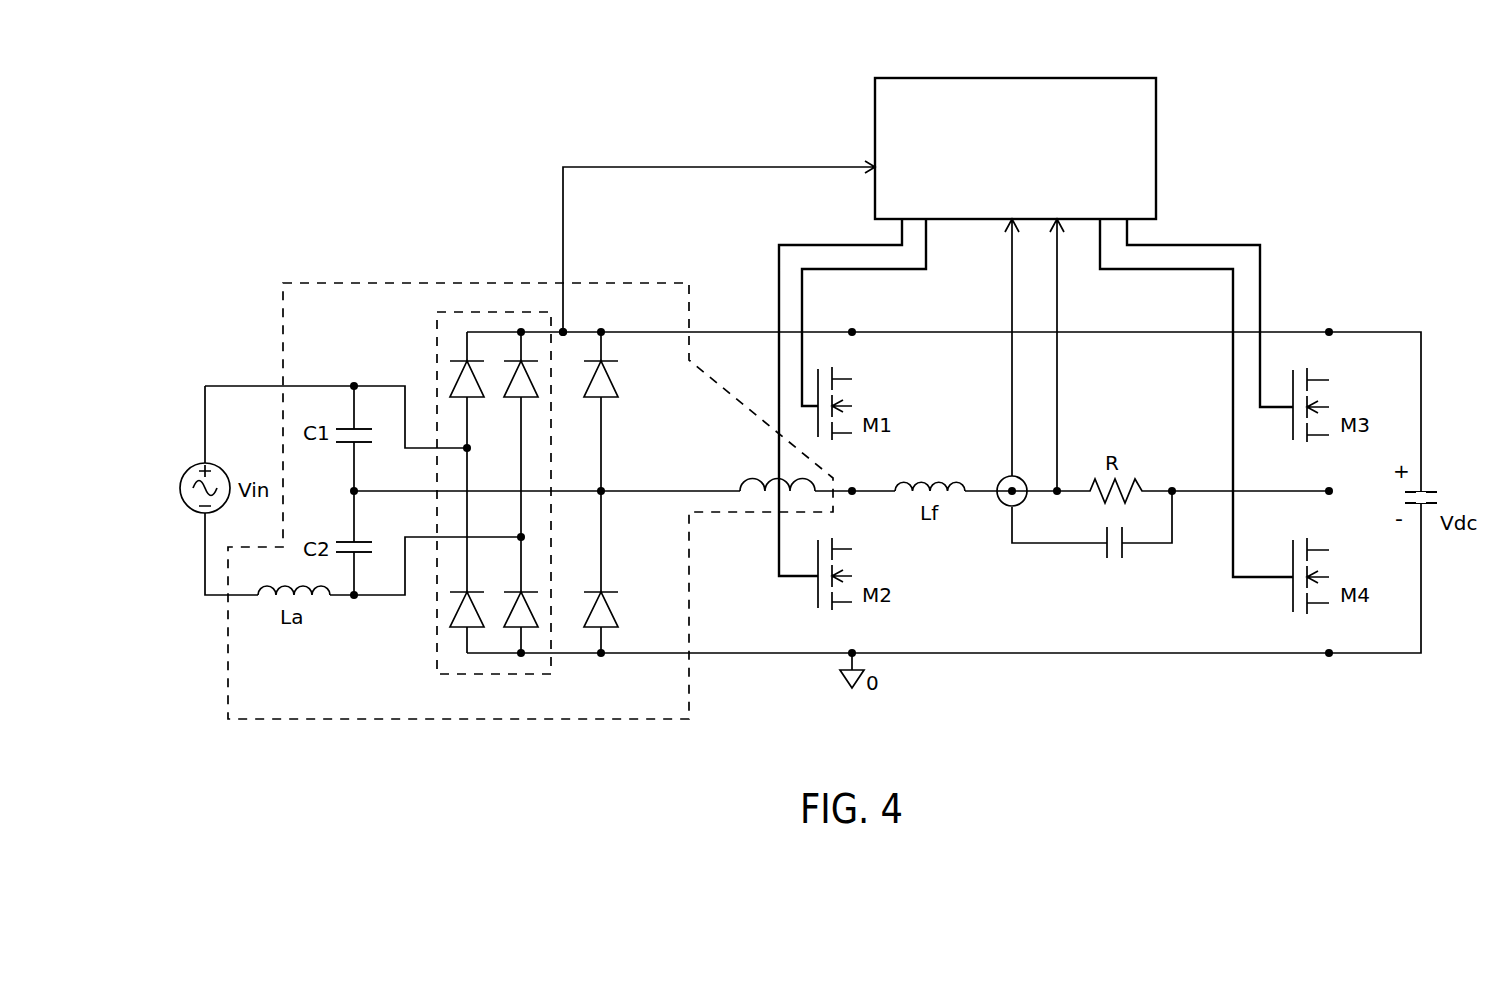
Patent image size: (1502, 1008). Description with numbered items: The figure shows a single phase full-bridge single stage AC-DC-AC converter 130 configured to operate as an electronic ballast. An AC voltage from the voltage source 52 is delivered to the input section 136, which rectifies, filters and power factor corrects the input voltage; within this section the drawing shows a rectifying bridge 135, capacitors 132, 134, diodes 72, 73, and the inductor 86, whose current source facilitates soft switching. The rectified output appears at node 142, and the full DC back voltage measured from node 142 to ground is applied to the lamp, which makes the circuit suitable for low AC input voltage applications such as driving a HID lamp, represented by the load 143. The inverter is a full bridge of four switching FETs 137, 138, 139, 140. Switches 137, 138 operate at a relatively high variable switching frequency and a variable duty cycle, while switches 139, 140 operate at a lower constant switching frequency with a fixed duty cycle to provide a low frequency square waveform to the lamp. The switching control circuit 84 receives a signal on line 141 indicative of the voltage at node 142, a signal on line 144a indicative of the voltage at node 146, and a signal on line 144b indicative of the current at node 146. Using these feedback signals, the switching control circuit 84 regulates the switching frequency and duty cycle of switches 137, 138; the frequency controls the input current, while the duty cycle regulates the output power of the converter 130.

The voltage source 52 is at (190, 467).
The capacitor C1 132 is at (366, 446).
The capacitor C2 134 is at (365, 540).
The diode bridge rectifier 135 is at (435, 640).
The input section 136 is at (354, 277).
The diode Da 72 is at (618, 388).
The diode Db 73 is at (614, 614).
The inductor L1 86 is at (763, 478).
The line 141 is at (563, 223).
The node 142 is at (566, 332).
The switching control circuit 84 is at (1090, 78).
The switching FET 137 is at (840, 405).
The switching FET 138 is at (840, 575).
The switching FET 139 is at (1318, 405).
The switching FET 140 is at (1318, 575).
The load 143 is at (1128, 487).
The node 146 is at (1005, 500).
The line 144a is at (1058, 425).
The line 144b is at (1010, 425).
The single phase full-bridge single stage AC-DC-AC converter 130 is at (1260, 101).